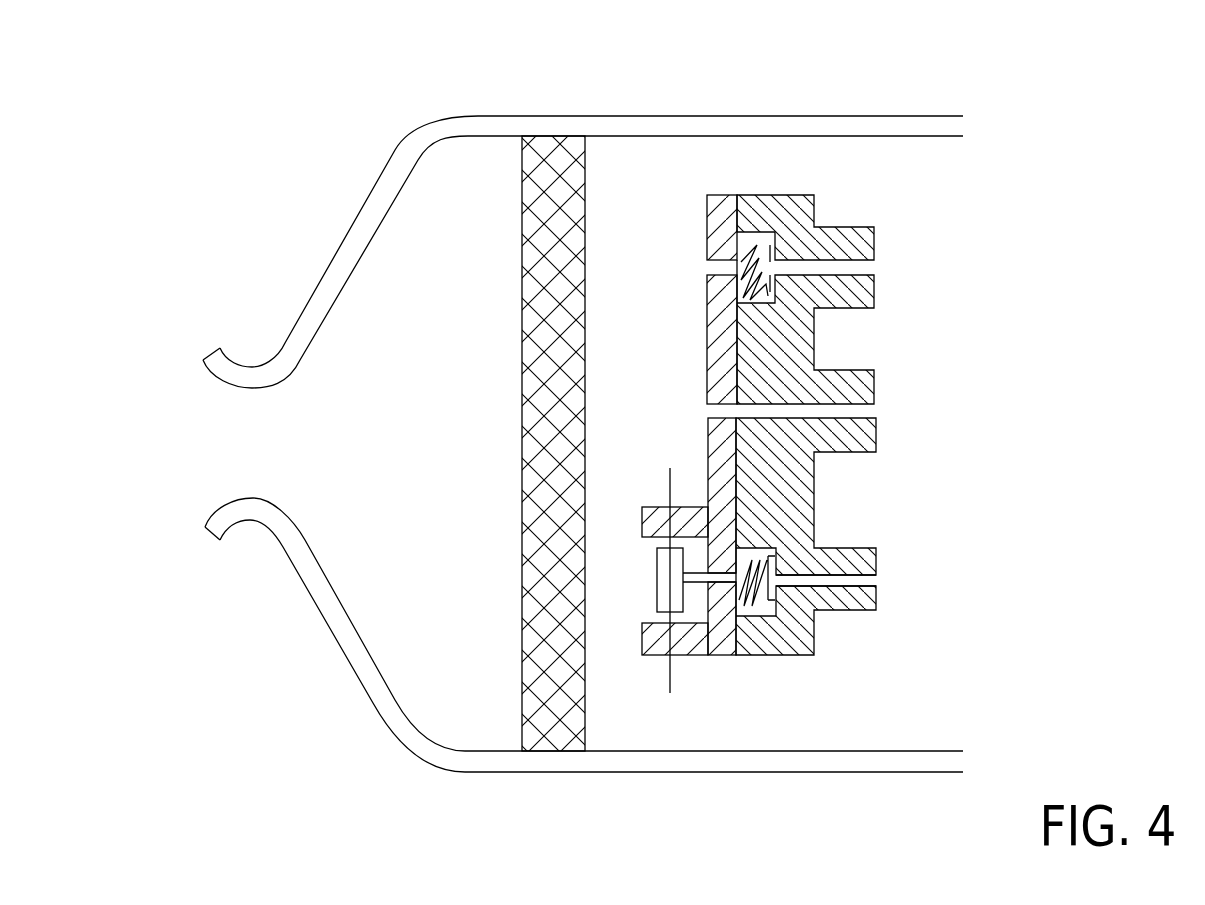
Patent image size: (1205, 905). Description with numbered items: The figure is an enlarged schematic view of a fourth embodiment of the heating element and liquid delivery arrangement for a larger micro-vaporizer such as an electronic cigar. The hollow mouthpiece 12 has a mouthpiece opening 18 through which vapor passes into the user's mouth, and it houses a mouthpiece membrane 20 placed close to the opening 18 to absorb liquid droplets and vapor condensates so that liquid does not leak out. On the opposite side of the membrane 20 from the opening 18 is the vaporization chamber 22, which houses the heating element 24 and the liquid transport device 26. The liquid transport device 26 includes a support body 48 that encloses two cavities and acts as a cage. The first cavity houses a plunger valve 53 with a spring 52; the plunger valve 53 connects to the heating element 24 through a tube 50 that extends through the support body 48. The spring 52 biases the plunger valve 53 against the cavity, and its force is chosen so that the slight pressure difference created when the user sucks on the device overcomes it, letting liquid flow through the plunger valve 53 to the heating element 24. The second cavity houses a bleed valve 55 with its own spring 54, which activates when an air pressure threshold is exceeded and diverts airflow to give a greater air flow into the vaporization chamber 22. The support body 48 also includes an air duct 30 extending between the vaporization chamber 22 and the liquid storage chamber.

The mouthpiece 12 is at (412, 147).
The mouthpiece opening 18 is at (233, 445).
The mouthpiece membrane 20 is at (555, 720).
The vaporization chamber 22 is at (630, 173).
The heating element 24 is at (663, 582).
The liquid transport device 26 is at (790, 429).
The air duct 30 is at (776, 544).
The support body 48 is at (796, 276).
The tube 50 is at (693, 587).
The spring 52 is at (758, 608).
The plunger valve 53 is at (777, 583).
The spring 54 is at (737, 242).
The bleed valve 55 is at (773, 260).